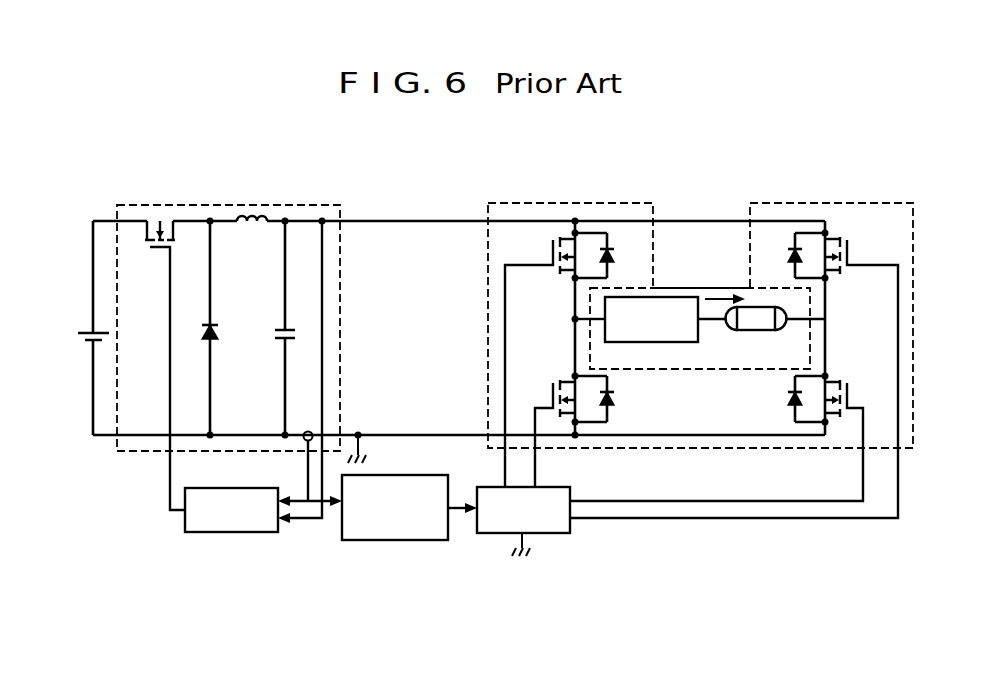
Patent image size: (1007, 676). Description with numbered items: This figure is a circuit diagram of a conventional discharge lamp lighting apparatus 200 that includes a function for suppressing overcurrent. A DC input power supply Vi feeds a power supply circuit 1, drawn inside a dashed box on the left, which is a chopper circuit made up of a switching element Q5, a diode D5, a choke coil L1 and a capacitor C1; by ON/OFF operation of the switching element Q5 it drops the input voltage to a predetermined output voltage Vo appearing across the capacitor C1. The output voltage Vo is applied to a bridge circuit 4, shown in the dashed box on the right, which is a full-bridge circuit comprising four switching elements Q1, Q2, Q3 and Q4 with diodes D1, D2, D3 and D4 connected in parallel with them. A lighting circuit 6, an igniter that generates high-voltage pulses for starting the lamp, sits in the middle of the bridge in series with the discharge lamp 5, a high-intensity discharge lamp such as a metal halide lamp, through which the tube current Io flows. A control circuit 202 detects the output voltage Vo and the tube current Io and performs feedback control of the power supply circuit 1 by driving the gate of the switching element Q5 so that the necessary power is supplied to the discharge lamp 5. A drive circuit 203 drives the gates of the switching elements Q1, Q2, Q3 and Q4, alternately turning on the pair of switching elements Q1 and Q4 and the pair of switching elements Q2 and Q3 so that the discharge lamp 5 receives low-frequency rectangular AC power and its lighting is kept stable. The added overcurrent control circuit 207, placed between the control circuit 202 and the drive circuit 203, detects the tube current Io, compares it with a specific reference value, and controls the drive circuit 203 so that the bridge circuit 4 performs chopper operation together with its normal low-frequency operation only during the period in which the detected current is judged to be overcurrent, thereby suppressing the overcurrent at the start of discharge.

The power supply circuit 1 is at (338, 213).
The bridge circuit 4 is at (640, 212).
The discharge lamp 5 is at (761, 336).
The lighting circuit 6 is at (678, 288).
The discharge lamp lighting apparatus 200 is at (567, 571).
The control circuit 202 is at (203, 533).
The drive circuit 203 is at (487, 534).
The overcurrent control circuit 207 is at (368, 540).
The switching element Q1 is at (540, 362).
The switching element Q2 is at (547, 433).
The switching element Q3 is at (734, 377).
The switching element Q4 is at (726, 440).
The switching element Q5 is at (165, 365).
The diode D1 is at (621, 255).
The diode D2 is at (621, 399).
The diode D3 is at (779, 255).
The diode D4 is at (779, 399).
The diode D5 is at (226, 328).
The choke coil L1 is at (252, 239).
The capacitor C1 is at (298, 328).
The input power supply Vi is at (79, 328).
The output voltage Vo is at (322, 221).
The tube current Io is at (724, 288).